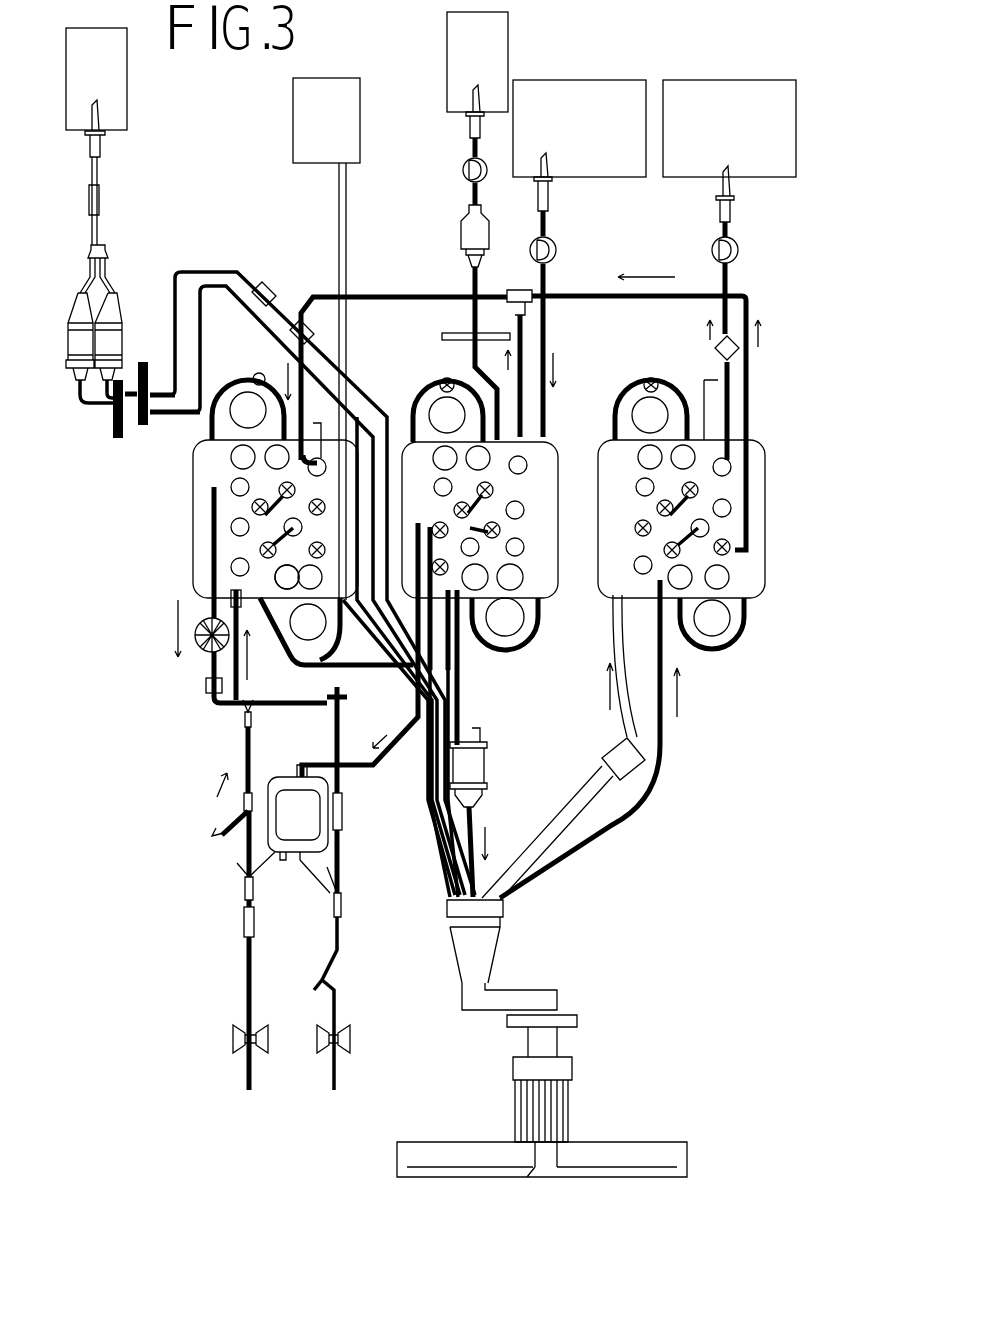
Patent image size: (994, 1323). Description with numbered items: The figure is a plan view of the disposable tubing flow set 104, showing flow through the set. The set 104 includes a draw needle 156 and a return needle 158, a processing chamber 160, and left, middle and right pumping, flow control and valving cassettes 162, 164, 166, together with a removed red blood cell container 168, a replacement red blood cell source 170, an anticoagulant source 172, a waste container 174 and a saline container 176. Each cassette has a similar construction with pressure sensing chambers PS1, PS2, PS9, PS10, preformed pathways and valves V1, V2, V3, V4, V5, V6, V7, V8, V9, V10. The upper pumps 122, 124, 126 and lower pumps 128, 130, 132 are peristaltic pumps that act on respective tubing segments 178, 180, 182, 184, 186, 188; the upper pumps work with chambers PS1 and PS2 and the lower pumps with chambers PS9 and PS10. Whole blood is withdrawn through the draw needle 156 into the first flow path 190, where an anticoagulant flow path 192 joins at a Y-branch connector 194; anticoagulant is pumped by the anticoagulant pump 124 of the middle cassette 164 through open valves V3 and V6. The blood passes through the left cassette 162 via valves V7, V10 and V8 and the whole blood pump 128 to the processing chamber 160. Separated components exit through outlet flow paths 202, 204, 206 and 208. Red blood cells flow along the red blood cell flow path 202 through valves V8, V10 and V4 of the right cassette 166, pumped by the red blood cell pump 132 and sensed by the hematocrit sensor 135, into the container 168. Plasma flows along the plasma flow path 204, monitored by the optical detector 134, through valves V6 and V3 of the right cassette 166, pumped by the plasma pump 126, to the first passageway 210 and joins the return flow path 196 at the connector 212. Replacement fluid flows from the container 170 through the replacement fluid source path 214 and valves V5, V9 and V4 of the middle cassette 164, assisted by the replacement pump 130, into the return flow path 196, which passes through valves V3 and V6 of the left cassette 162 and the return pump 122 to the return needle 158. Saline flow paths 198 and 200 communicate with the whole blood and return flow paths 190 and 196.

The disposable tubing flow set 104 is at (567, 57).
The upper left or return pump 122 is at (242, 410).
The upper or anticoagulant pump 124 is at (428, 398).
The upper or plasma pump 126 is at (632, 400).
The lower or whole blood pump 128 is at (305, 640).
The lower or replacement pump 130 is at (510, 640).
The lower or red blood cell pump 132 is at (714, 632).
The optical detector 134 is at (645, 762).
The hematocrit sensor 135 is at (745, 325).
The draw needle 156 is at (250, 1090).
The return needle 158 is at (333, 1090).
The processing chamber 160 is at (590, 1142).
The left pumping, flow control and valving cassette 162 is at (193, 500).
The middle pumping, flow control and valving cassette 164 is at (530, 460).
The right pumping, flow control and valving cassette 166 is at (768, 460).
The removed red blood cell container 168 is at (700, 80).
The replacement red blood cell source 170 is at (580, 80).
The anticoagulant source 172 is at (510, 40).
The waste container 174 is at (300, 78).
The saline container 176 is at (127, 110).
The tubing segment 178 is at (259, 379).
The tubing segment 180 is at (445, 378).
The tubing segment 182 is at (655, 380).
The tubing segment 184 is at (348, 630).
The tubing segment 186 is at (540, 630).
The tubing segment 188 is at (747, 627).
The first flow path 190 is at (470, 800).
The anticoagulant flow path 192 is at (470, 290).
The Y-branch connector 194 is at (243, 890).
The return or replacement fluid flow path 196 is at (352, 296).
The saline flow path 198 is at (193, 310).
The saline flow path 200 is at (210, 272).
The red blood cell flow path 202 is at (646, 812).
The plasma flow path 204 is at (584, 805).
The outlet flow path 206 is at (448, 883).
The outlet flow path 208 is at (450, 907).
The first passageway 210 is at (585, 292).
The connector 212 is at (515, 290).
The replacement fluid source path 214 is at (546, 285).
The valve V1 is at (252, 506).
The valve V2 is at (767, 484).
The valve V3 is at (320, 423).
The valve V4 is at (317, 516).
The valve V5 is at (325, 556).
The valve V6 is at (232, 487).
The valve V7 is at (231, 527).
The valve V8 is at (231, 567).
The valve V9 is at (260, 550).
The valve V10 is at (290, 540).
The pressure sensing chamber PS1 is at (238, 460).
The pressure sensing chamber PS2 is at (272, 452).
The pressure sensing chamber PS9 is at (280, 585).
The pressure sensing chamber PS10 is at (195, 640).